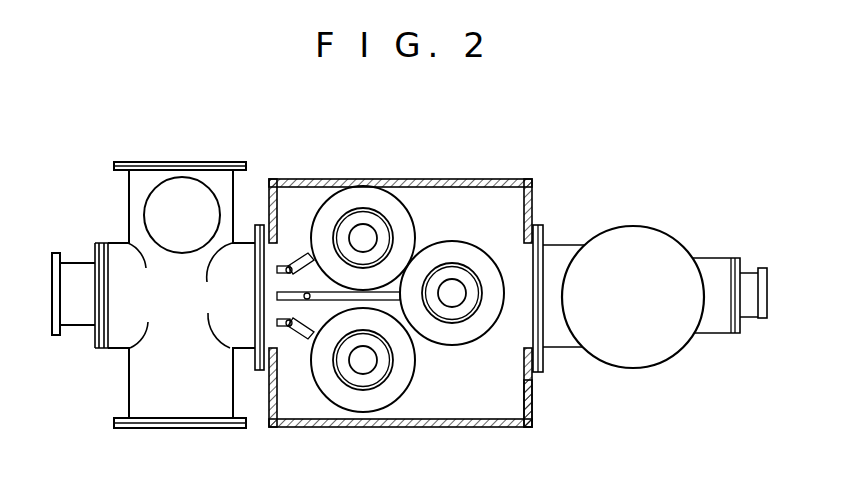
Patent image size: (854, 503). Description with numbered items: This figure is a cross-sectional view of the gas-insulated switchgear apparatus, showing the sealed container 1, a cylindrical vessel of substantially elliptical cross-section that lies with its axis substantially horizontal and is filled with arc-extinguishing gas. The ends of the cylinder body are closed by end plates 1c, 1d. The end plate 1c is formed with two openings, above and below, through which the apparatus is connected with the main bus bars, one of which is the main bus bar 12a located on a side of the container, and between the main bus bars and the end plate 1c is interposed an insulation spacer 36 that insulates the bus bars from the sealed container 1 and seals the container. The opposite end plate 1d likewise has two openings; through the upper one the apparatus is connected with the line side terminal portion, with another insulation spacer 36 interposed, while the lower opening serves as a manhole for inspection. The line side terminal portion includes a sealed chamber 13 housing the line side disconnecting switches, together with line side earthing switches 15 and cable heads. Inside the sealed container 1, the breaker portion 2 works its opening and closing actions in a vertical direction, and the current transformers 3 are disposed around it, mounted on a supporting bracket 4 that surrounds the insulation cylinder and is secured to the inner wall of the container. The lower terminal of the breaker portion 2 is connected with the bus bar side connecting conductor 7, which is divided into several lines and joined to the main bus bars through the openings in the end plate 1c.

The sealed container 1 is at (481, 179).
The end plate 1c is at (270, 430).
The end plate 1d is at (532, 403).
The breaker portion 2 is at (358, 368).
The current transformer 3 is at (357, 200).
The supporting bracket 4 is at (385, 223).
The bus bar side connecting conductor 7 is at (291, 263).
The main bus bar 12a is at (129, 210).
The sealed chamber 13 is at (640, 225).
The line side earthing switch 15 is at (713, 258).
The insulation spacer 36 is at (257, 262).